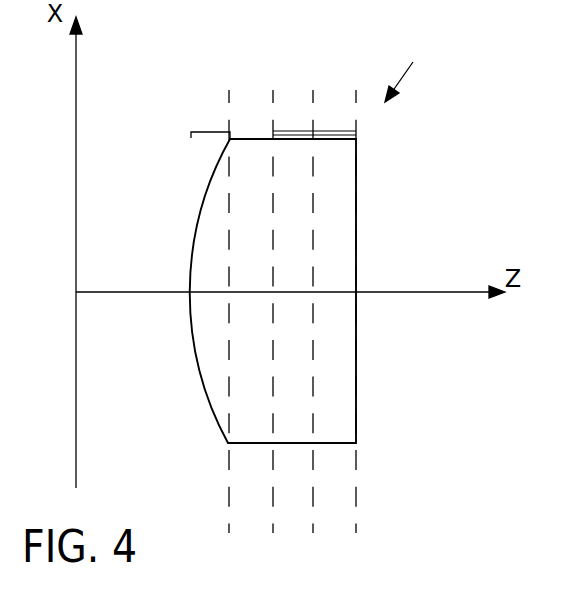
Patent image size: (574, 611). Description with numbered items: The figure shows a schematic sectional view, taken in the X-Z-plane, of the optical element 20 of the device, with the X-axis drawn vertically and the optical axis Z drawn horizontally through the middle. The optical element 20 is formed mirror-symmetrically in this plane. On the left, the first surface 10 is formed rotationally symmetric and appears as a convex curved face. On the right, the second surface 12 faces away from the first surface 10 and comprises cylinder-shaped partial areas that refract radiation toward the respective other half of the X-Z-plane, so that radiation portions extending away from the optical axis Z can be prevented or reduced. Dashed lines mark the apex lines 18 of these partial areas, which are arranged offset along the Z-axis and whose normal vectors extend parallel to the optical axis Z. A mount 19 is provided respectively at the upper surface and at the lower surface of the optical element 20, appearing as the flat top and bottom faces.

The first surface 10 is at (211, 125).
The second surface 12 is at (313, 127).
The apex lines 18 is at (356, 232).
The mount 19 is at (248, 139).
The optical element 20 is at (413, 64).